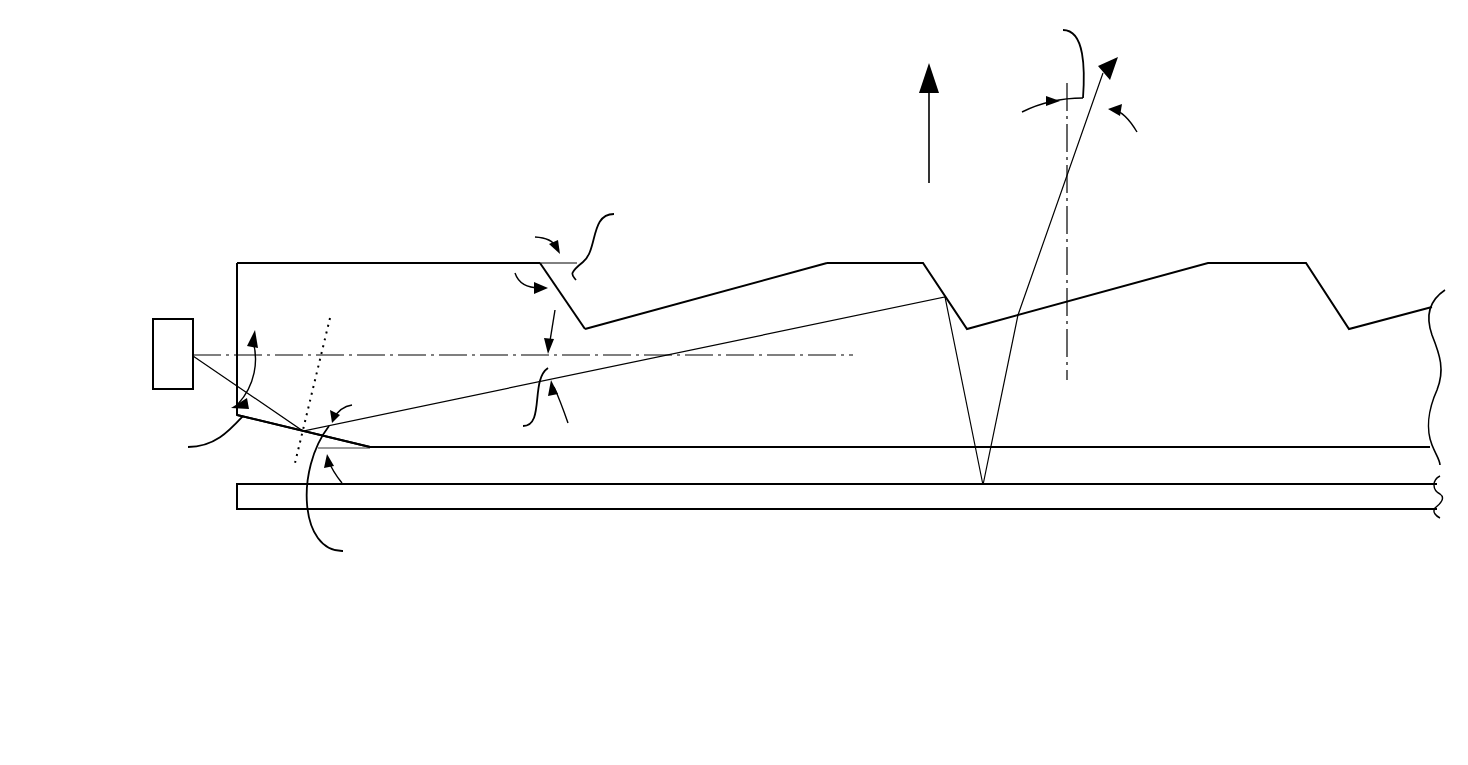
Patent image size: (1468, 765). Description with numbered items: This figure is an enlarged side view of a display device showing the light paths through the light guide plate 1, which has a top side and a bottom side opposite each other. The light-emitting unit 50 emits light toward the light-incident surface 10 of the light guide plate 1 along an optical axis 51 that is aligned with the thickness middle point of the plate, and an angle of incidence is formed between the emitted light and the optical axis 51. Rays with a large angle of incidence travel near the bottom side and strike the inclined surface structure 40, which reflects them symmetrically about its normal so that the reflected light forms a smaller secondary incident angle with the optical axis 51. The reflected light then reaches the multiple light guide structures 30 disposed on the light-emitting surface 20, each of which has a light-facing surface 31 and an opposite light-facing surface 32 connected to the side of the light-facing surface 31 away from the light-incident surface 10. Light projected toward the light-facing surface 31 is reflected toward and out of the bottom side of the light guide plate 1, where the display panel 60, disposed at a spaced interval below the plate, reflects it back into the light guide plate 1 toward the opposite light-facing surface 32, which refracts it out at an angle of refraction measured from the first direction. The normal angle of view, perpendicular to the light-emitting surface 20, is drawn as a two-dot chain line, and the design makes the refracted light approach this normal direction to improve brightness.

The light guide plate 1 is at (313, 226).
The light-incident surface 10 is at (237, 283).
The light-emitting surface 20 is at (412, 263).
The light guide structures 30 is at (986, 234).
The light-facing surface 31 is at (573, 309).
The opposite light-facing surface 32 is at (698, 231).
The inclined surface structure 40 is at (268, 432).
The light-emitting unit 50 is at (168, 319).
The optical axis 51 is at (749, 355).
The display panel 60 is at (520, 503).